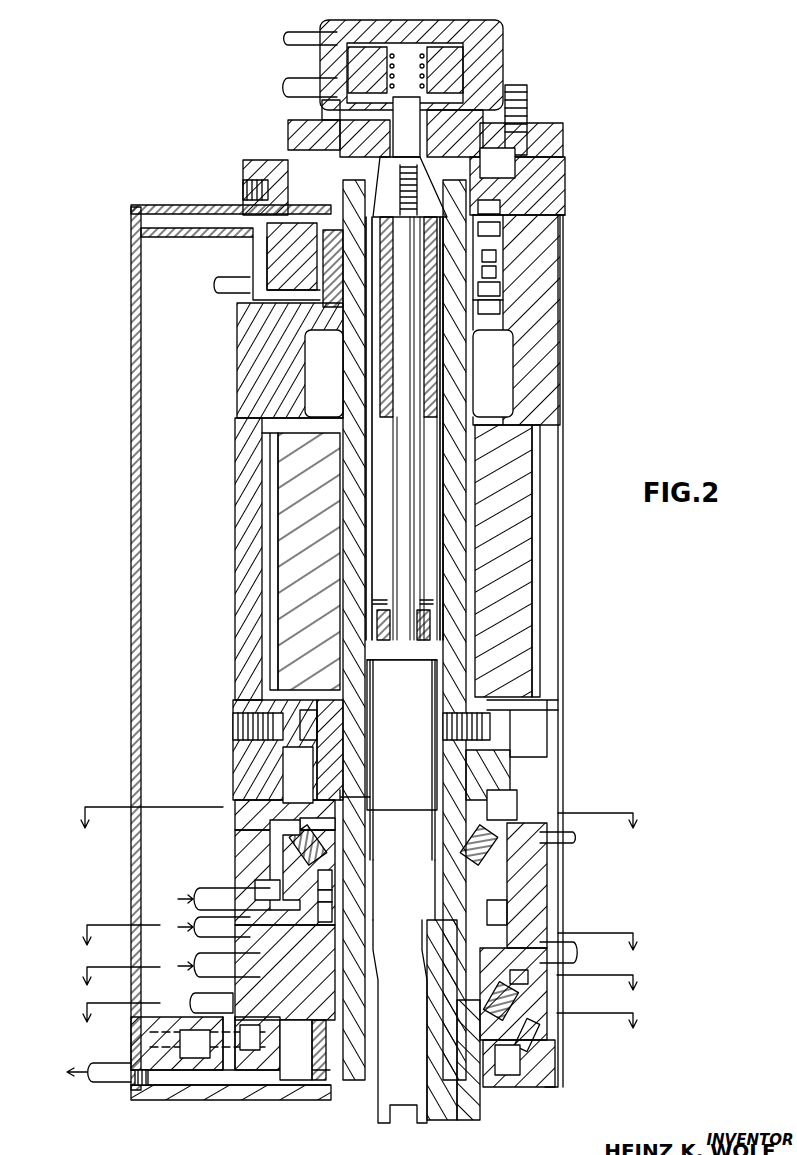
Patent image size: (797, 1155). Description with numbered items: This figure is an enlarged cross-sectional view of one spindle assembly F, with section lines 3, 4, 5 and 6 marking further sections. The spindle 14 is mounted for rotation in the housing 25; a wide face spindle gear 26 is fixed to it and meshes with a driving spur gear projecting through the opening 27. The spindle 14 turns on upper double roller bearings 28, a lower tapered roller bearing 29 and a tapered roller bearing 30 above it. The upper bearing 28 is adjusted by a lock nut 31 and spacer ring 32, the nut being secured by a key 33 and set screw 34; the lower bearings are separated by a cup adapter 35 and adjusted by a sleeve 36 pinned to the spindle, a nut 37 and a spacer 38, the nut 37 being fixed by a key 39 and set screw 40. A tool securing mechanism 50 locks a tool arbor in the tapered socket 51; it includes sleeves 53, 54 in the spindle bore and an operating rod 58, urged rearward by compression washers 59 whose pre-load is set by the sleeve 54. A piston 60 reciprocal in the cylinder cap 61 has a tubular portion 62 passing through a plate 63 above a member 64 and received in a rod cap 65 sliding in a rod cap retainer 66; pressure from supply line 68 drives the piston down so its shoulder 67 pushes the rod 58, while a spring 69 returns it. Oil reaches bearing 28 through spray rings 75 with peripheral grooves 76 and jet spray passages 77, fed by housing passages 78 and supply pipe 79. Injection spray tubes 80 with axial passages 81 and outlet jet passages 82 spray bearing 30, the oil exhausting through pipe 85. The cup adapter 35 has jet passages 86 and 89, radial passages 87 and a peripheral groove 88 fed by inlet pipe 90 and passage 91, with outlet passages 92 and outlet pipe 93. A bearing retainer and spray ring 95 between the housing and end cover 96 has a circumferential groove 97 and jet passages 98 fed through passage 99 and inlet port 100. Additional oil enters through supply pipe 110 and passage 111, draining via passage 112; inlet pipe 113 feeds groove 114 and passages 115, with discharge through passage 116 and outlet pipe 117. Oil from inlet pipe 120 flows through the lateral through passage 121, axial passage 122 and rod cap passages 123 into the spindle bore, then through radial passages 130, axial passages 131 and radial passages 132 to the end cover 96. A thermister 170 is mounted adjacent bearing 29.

The spindle 14 is at (455, 472).
The housing 25 is at (245, 501).
The spindle gear 26 is at (527, 506).
The opening 27 is at (560, 549).
The upper double roller bearings 28 is at (500, 265).
The lower tapered roller bearing 29 is at (520, 1004).
The tapered roller bearing 30 is at (502, 805).
The lock nut 31 is at (517, 181).
The spacer ring 32 is at (407, 630).
The key 33 is at (322, 196).
The set screw 34 is at (305, 165).
The cup adapter 35 is at (520, 900).
The sleeve 36 is at (361, 750).
The nut 37 is at (512, 712).
The spacer 38 is at (454, 775).
The key 39 is at (330, 700).
The set screw 40 is at (303, 712).
The tool securing mechanism 50 is at (418, 693).
The tapered socket 51 is at (426, 1035).
The sleeve 53 is at (427, 671).
The sleeve 54 is at (427, 648).
The operating rod 58 is at (400, 377).
The compression washers 59 is at (378, 601).
The piston 60 is at (448, 43).
The cylinder cap 61 is at (503, 34).
The tubular portion 62 is at (437, 107).
The plate 63 is at (330, 107).
The member 64 is at (295, 130).
The rod cap 65 is at (370, 132).
The rod cap retainer 66 is at (478, 142).
The shoulder 67 is at (455, 132).
The fluid pressure supply line 68 is at (312, 36).
The spring 69 is at (433, 110).
The spray rings 75 is at (495, 287).
The peripheral groove 76 is at (495, 304).
The jet spray passages 77 is at (570, 257).
The passages 78 is at (260, 259).
The supply pipe 79 is at (236, 300).
The injection spray tubes 80 is at (240, 803).
The axial passage 81 is at (298, 775).
The outlet jet passage 82 is at (340, 822).
The pipe 85 is at (570, 843).
The jet passages 86 is at (330, 880).
The radial passages 87 is at (330, 898).
The peripheral groove 88 is at (275, 896).
The jet passages 89 is at (330, 916).
The oil inlet pipe 90 is at (215, 920).
The passage 91 is at (230, 940).
The passages 92 is at (520, 922).
The outlet pipe 93 is at (545, 940).
The bearing retainer and spray ring 95 is at (545, 1040).
The spindle housing end cover 96 is at (555, 1077).
The circumferential groove 97 is at (241, 1082).
The jet passages 98 is at (505, 1075).
The passage 99 is at (196, 1075).
The inlet port 100 is at (142, 1035).
The supply pipe 110 is at (215, 893).
The passage 111 is at (262, 880).
The passage 112 is at (320, 855).
The oil inlet pipe 113 is at (210, 972).
The groove 114 is at (535, 982).
The passages 115 is at (297, 1085).
The passage 116 is at (160, 1086).
The outlet pipe 117 is at (115, 1084).
The oil inlet pipe 120 is at (300, 82).
The lateral through passage 121 is at (408, 68).
The axial passage 122 is at (395, 104).
The passages 123 is at (405, 239).
The radial passages 130 is at (357, 797).
The axial passages 131 is at (482, 1110).
The radial passages 132 is at (372, 1055).
The thermister 170 is at (212, 1000).
The section line 3 is at (361, 1023).
The section line 4 is at (361, 985).
The section line 5 is at (361, 946).
The section line 6 is at (360, 828).
The spindle assembly F is at (590, 381).